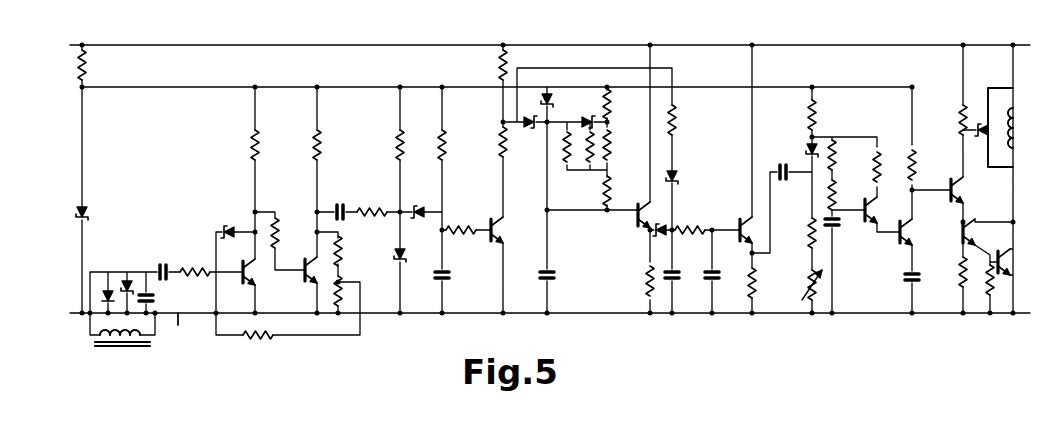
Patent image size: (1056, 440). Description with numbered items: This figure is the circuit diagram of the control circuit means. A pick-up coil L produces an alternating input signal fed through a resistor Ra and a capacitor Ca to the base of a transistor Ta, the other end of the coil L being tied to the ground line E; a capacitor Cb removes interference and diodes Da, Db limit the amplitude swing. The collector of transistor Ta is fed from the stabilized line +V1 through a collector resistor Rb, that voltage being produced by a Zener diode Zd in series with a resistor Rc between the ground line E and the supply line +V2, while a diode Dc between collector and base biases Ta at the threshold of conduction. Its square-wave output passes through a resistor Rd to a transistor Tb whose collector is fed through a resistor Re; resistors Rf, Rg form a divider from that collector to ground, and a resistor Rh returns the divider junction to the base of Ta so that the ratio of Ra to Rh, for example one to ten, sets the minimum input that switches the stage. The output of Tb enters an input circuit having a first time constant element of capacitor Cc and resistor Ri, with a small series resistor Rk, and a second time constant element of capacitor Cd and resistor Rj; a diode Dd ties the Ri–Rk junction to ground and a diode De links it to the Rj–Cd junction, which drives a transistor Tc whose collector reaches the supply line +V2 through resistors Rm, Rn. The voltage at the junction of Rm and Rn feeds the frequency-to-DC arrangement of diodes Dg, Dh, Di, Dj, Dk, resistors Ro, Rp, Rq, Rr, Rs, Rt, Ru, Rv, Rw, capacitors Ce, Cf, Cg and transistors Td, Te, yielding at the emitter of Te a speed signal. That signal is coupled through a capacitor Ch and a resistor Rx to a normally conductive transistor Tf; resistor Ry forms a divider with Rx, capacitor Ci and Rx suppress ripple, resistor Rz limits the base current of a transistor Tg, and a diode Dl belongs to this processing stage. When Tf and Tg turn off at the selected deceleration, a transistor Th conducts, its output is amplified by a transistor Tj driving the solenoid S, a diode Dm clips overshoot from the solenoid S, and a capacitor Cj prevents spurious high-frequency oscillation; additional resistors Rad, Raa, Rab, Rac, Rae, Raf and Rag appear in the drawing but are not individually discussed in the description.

The supply voltage line V2 is at (240, 45).
The stabilized positive voltage line V1 is at (206, 87).
The resistor Rc is at (87, 80).
The Zener diode Zd is at (100, 214).
The collector resistor Rb is at (273, 145).
The resistor Re is at (335, 145).
The resistor Ri is at (462, 224).
The resistor Rj is at (447, 158).
The resistor Rm is at (498, 70).
The resistor Rn is at (499, 150).
The diode Dg is at (544, 92).
The diode Dh is at (575, 118).
The diode Di is at (597, 126).
The resistor Rs is at (624, 104).
The resistor Ro is at (562, 152).
The resistor Rp is at (586, 168).
The resistor Rq is at (625, 148).
The resistor Rr is at (622, 192).
The resistor Rt is at (677, 135).
The diode Dj is at (678, 175).
The diode Dk is at (662, 226).
The resistor Rv is at (694, 243).
The resistor Ru is at (646, 272).
The capacitor Cd is at (460, 275).
The capacitor Ce is at (565, 275).
The capacitor Cf is at (680, 283).
The capacitor Cg is at (720, 283).
The diode Dd is at (418, 262).
The diode De is at (418, 208).
The capacitor Cc is at (339, 209).
The resistor Rk is at (375, 196).
The resistor Rd is at (280, 242).
The diode Dc is at (243, 221).
The transistor Ta is at (263, 276).
The further transistor Tb is at (301, 283).
The resistor Rf is at (356, 262).
The resistor Rg is at (344, 289).
The transistor Tc is at (512, 231).
The transistor Td is at (632, 226).
The transistor Te is at (758, 231).
The resistor Rh is at (260, 348).
The output coil L is at (140, 348).
The ground line E is at (180, 332).
The capacitor Ca is at (164, 265).
The resistor Ra is at (197, 259).
The diode Da is at (106, 288).
The diode Db is at (130, 280).
The capacitor Cb is at (164, 297).
The capacitor Ch is at (773, 161).
The diode Dl is at (808, 150).
The resistor Rad is at (816, 134).
The resistor Ry is at (851, 157).
The resistor Rx is at (852, 194).
The resistor Rz is at (884, 160).
The normally conductive transistor Tf is at (885, 212).
The capacitor Ci is at (838, 226).
The further normally conductive transistor Tg is at (920, 233).
The capacitor Cj is at (905, 279).
The resistor Raa is at (938, 163).
The resistor Rab is at (958, 110).
The diode Dm is at (975, 134).
The solenoid S is at (1012, 123).
The normally non-conductive transistor Th is at (975, 189).
The further transistor Tj is at (1001, 235).
The resistor Rac is at (960, 290).
The resistor Rag is at (994, 300).
The resistor Rae is at (808, 242).
The resistor Rw is at (758, 290).
The variable resistor Raf is at (812, 303).